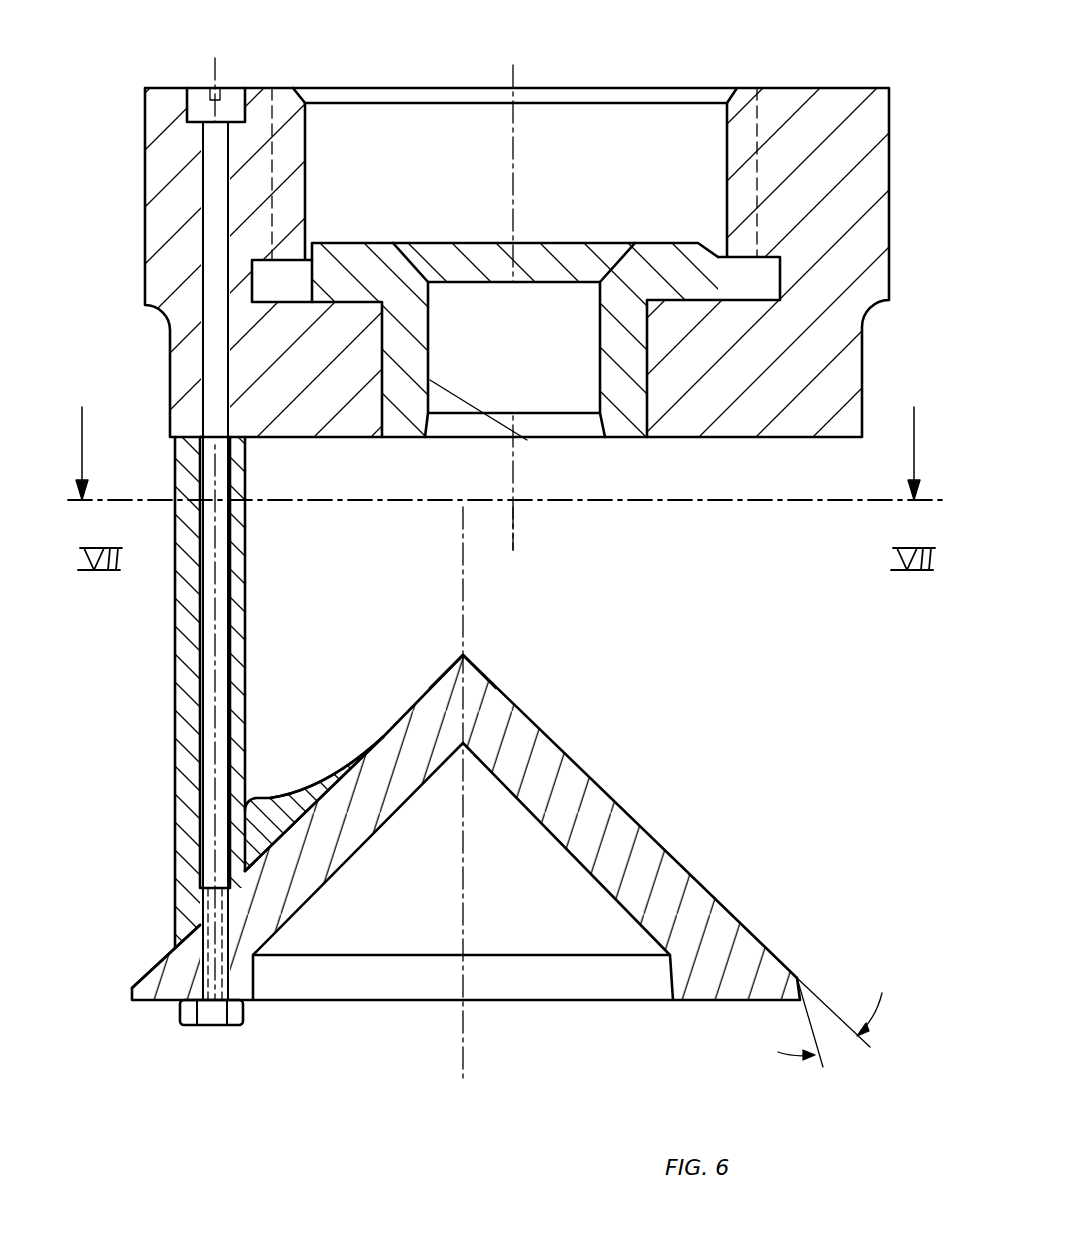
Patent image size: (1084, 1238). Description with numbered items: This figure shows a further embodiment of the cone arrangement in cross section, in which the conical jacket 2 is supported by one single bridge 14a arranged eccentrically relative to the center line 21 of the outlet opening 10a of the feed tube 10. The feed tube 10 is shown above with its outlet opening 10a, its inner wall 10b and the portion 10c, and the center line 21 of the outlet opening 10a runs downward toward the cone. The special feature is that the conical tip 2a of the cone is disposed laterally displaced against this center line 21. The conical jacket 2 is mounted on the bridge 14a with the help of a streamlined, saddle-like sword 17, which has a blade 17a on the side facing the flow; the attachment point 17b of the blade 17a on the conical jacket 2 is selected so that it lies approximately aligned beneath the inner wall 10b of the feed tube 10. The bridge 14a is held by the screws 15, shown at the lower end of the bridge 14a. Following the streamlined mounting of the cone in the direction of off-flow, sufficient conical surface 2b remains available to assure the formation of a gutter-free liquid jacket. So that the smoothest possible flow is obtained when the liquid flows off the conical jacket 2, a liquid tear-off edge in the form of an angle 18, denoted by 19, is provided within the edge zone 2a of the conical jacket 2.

The feed tube 10 is at (170, 217).
The outlet opening 10a is at (594, 440).
The inner wall 10b is at (537, 393).
The chamfered corner 10c is at (428, 417).
The center line 21 is at (513, 532).
The bridge 14a is at (188, 645).
The conical jacket 2 is at (548, 732).
The conical tip 2a is at (463, 636).
The conical surface 2b is at (159, 961).
The sword 17 is at (262, 830).
The blade 17a is at (330, 785).
The attachment point 17b is at (396, 722).
The angle 18 is at (797, 978).
The liquid tear-off edge 19 is at (815, 1022).
The screws 15 is at (200, 1027).